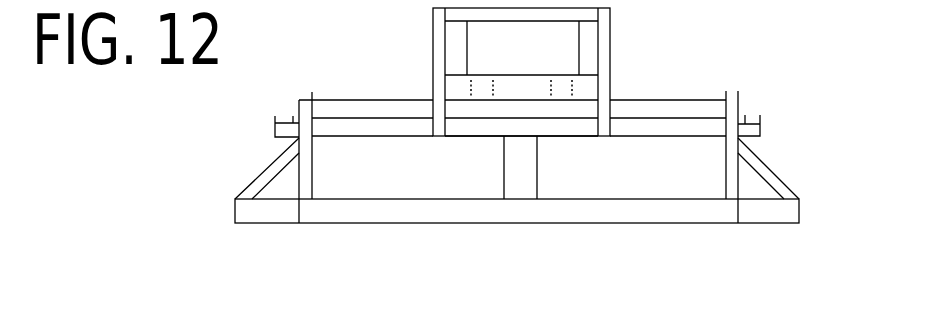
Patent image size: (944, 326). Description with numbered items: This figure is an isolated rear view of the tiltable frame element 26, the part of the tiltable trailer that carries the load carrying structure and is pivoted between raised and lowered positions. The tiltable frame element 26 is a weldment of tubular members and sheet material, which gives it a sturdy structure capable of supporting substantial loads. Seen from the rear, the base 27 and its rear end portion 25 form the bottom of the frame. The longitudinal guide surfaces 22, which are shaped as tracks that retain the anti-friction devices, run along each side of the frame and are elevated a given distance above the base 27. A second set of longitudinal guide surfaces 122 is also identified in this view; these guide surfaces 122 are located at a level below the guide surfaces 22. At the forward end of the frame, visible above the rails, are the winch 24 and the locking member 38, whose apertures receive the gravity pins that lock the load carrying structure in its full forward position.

The longitudinal guide surfaces 22 is at (299, 100).
The winch 24 is at (535, 63).
The rear end portion 25 is at (422, 210).
The tiltable frame element 26 is at (340, 45).
The base 27 is at (688, 199).
The locking member 38 is at (487, 12).
The second set of longitudinal guide surfaces 122 is at (277, 123).